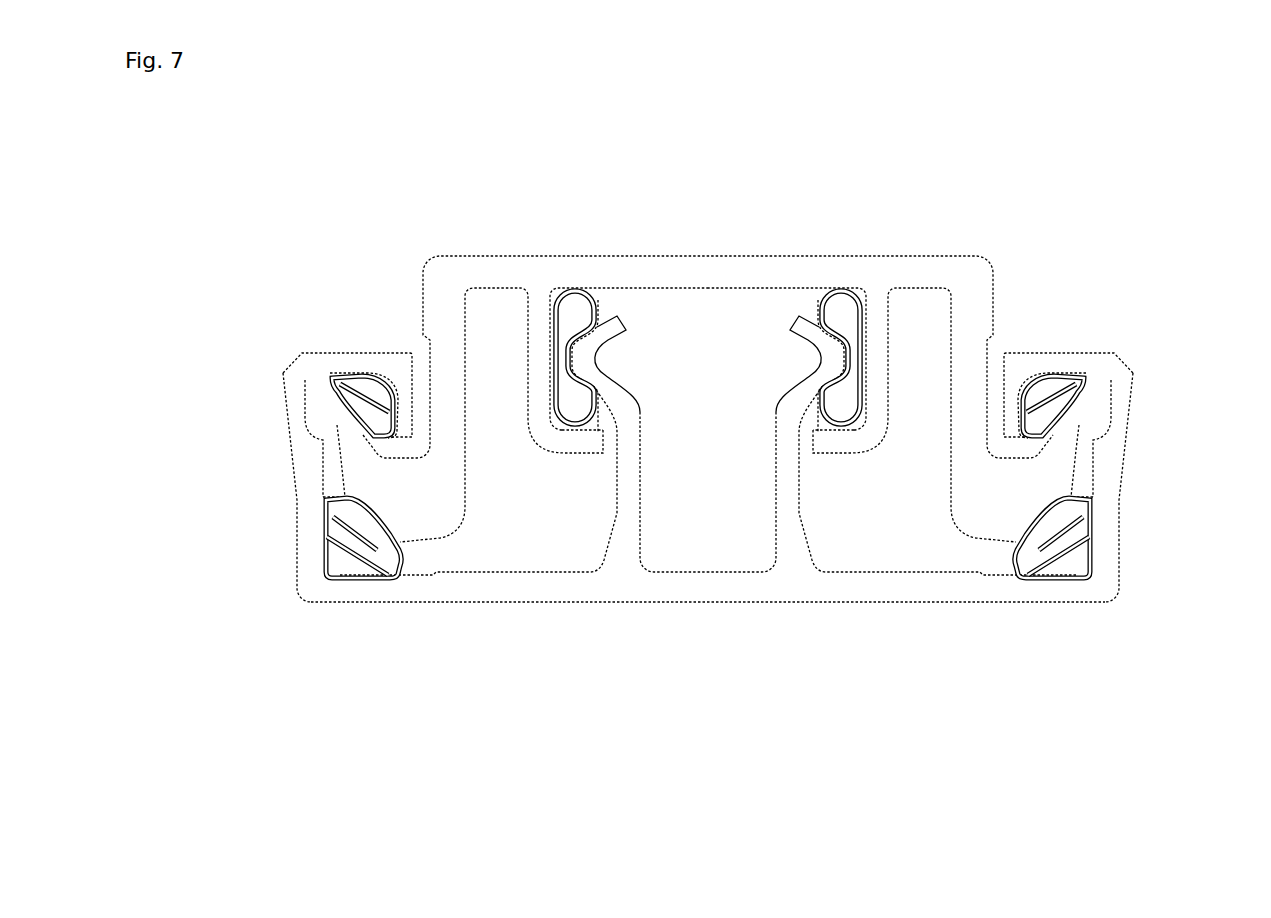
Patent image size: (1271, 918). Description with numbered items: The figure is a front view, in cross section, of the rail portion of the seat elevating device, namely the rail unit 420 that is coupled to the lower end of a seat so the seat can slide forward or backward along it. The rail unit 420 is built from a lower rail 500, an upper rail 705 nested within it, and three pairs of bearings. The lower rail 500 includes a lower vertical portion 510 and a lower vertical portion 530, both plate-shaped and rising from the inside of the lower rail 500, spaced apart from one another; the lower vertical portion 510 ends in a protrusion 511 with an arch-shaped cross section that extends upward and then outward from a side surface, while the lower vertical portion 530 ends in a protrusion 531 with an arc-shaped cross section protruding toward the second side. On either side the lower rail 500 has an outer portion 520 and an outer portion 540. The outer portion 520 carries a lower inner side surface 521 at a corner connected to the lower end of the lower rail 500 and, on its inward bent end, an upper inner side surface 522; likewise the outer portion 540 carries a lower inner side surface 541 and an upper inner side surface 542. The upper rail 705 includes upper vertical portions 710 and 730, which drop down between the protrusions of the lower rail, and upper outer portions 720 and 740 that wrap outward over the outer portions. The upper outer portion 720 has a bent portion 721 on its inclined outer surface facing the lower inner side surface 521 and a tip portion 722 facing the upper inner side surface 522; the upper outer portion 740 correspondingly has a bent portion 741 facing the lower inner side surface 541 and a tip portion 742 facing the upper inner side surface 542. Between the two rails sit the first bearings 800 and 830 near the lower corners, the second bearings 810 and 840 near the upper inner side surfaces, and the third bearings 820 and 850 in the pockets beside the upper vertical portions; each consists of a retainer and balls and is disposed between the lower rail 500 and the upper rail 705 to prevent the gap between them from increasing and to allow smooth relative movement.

The rail unit 420 is at (403, 236).
The lower rail 500 is at (622, 714).
The lower vertical portion 510 is at (787, 523).
The protrusion 511 is at (819, 382).
The outer portion 520 is at (1108, 535).
The lower inner side surface 521 is at (1089, 572).
The upper inner side surface 522 is at (1028, 378).
The lower vertical portion 530 is at (629, 523).
The protrusion 531 is at (597, 382).
The outer portion 540 is at (308, 535).
The lower inner side surface 541 is at (327, 572).
The upper inner side surface 542 is at (388, 378).
The upper rail 705 is at (622, 148).
The upper vertical portion 710 is at (878, 330).
The upper outer portion 720 is at (971, 300).
The bent portion 721 is at (1069, 486).
The tip portion 722 is at (1081, 396).
The upper vertical portion 730 is at (538, 330).
The upper outer portion 740 is at (445, 300).
The bent portion 741 is at (347, 486).
The tip portion 742 is at (335, 396).
The first bearing 800 is at (1081, 515).
The second bearing 810 is at (1086, 380).
The third bearing 820 is at (843, 312).
The first bearing 830 is at (335, 515).
The second bearing 840 is at (330, 380).
The third bearing 850 is at (573, 312).